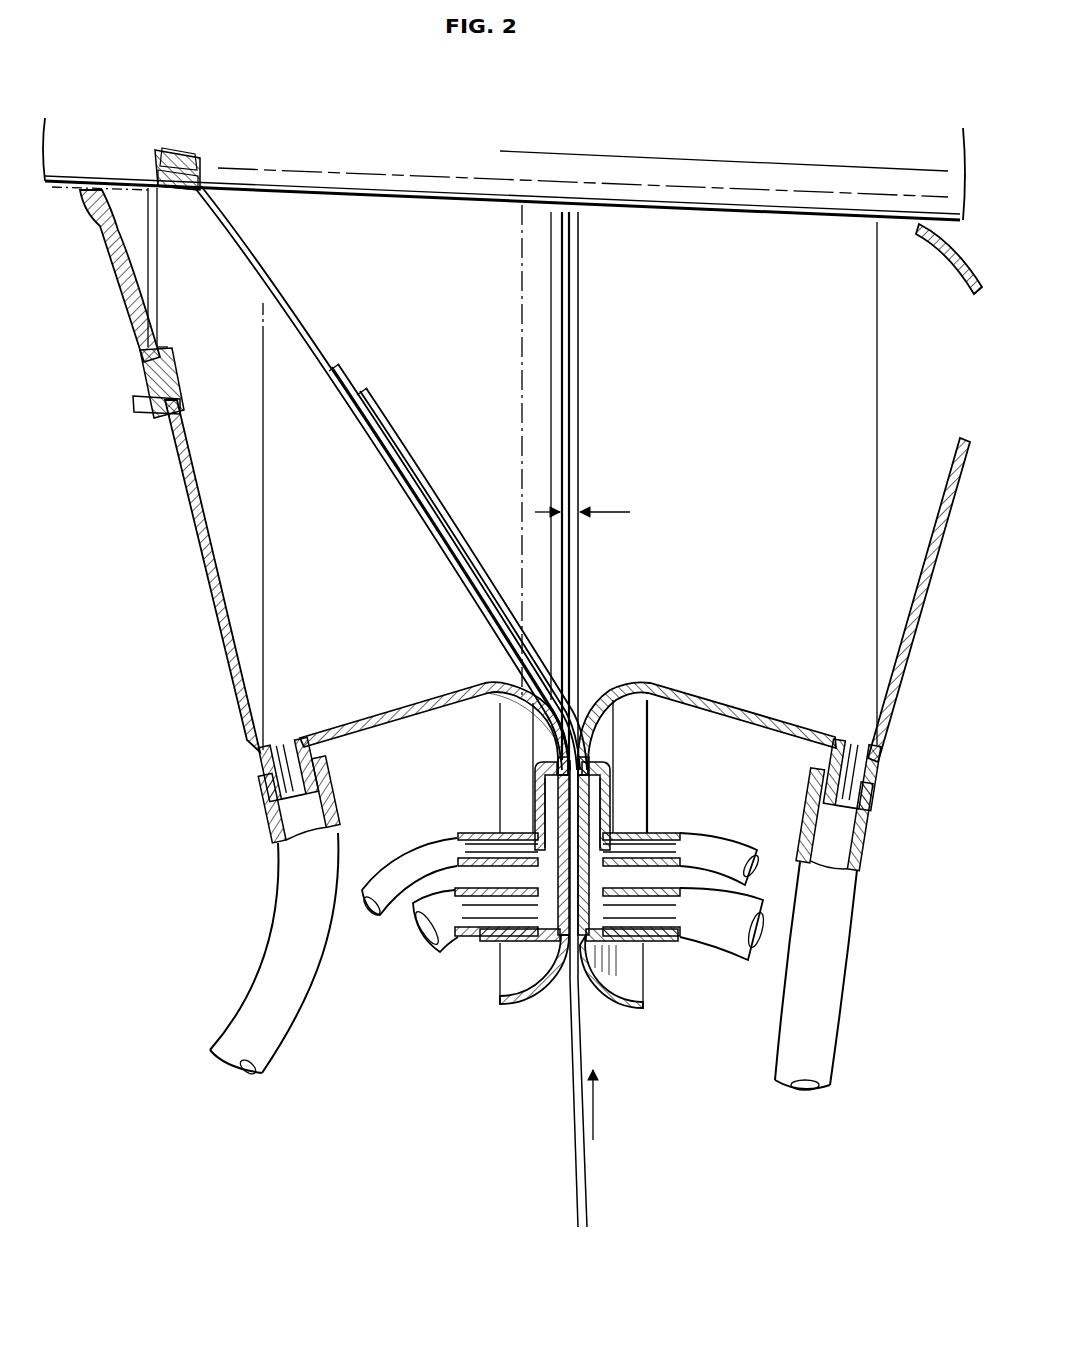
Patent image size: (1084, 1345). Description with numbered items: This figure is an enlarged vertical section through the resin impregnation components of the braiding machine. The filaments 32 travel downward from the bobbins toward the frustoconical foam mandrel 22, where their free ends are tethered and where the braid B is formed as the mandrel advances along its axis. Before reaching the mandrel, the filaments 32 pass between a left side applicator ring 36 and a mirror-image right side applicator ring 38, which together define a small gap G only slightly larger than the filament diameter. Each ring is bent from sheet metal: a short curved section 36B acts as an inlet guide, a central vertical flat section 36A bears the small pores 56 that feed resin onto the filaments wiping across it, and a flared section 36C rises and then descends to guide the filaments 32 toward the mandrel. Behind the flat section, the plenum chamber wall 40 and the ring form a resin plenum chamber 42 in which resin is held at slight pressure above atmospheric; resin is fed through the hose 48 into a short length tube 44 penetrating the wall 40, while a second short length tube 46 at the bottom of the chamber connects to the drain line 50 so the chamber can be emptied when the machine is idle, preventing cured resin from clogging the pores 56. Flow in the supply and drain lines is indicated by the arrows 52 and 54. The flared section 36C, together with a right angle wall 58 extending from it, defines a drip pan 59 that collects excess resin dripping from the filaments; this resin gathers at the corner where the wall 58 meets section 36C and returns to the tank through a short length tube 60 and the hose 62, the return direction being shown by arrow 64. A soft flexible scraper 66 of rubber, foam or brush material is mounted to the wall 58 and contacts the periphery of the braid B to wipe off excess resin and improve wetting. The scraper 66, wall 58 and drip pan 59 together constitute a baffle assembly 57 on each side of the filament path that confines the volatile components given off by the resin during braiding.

The mandrel 22 is at (448, 213).
The braid B is at (183, 150).
The scraper 66 is at (125, 300).
The right angle wall 58 is at (227, 632).
The baffle assembly 57 is at (228, 528).
The drip pan 59 is at (286, 692).
The filaments 32 is at (403, 484).
The gap G is at (598, 514).
The left side applicator ring 36 is at (446, 690).
The central vertical flat section 36A is at (562, 824).
The short curved section 36B is at (533, 1005).
The flared section 36C is at (520, 713).
The right side applicator ring 38 is at (700, 700).
The plenum chamber wall 40 is at (535, 769).
The resin plenum chamber 42 is at (545, 792).
The short length tube 44 is at (470, 836).
The pores 56 is at (590, 828).
The second short length tube 46 is at (522, 950).
The hose 48 is at (400, 870).
The drain line 50 is at (445, 960).
The flow arrow 52 is at (366, 907).
The flow arrow 54 is at (416, 936).
The short length tube 60 is at (296, 740).
The hose 62 is at (255, 985).
The flow arrow 64 is at (232, 1078).